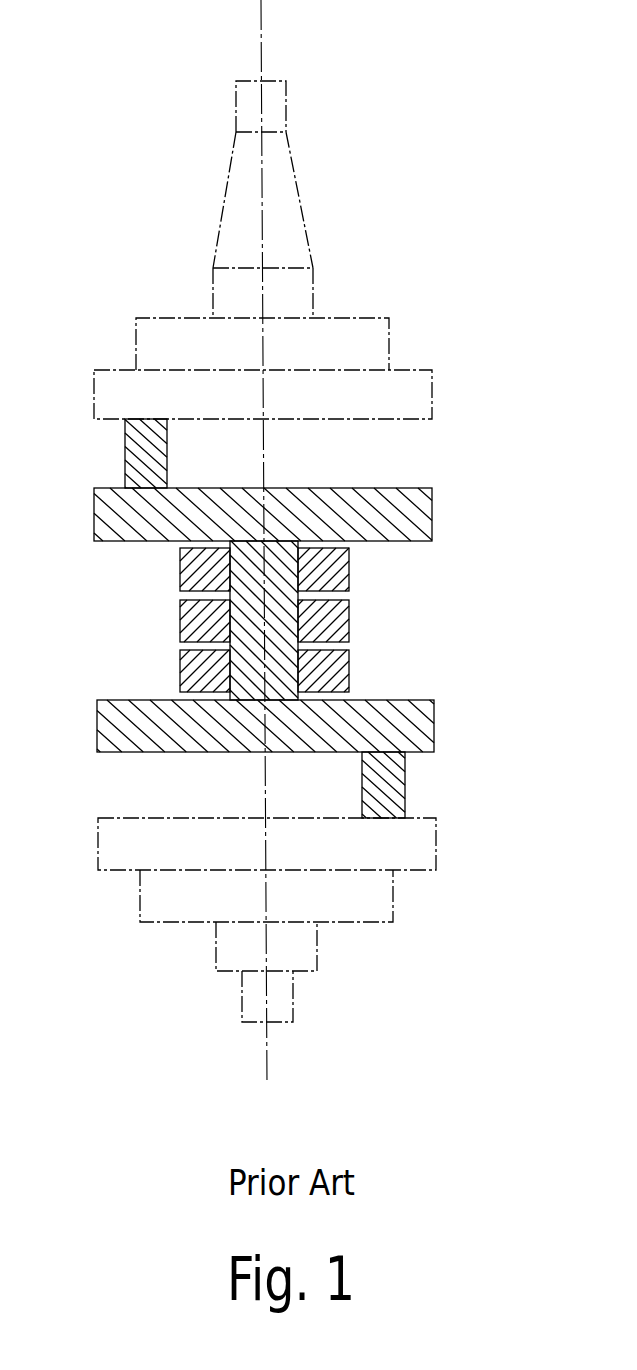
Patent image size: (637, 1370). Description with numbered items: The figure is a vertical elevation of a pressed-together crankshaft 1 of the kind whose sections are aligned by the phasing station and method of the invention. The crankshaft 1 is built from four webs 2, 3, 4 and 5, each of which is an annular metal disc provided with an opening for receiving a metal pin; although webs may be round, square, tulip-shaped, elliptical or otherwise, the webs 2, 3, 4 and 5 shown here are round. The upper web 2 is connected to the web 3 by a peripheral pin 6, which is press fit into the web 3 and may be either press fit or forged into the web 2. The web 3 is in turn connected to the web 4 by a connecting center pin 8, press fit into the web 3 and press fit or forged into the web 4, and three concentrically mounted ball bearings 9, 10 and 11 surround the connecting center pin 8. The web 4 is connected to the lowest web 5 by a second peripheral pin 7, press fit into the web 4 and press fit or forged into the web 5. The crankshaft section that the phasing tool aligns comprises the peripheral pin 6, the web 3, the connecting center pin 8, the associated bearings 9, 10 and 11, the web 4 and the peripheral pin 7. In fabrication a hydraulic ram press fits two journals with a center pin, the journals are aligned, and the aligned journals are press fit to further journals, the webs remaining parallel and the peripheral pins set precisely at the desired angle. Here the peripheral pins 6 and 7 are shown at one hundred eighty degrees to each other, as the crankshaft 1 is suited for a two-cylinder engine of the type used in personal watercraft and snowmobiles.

The pressed-together crankshaft 1 is at (306, 186).
The web 2 is at (438, 392).
The web 3 is at (438, 515).
The web 4 is at (434, 722).
The web 5 is at (436, 848).
The peripheral pin 6 is at (124, 453).
The peripheral pin 7 is at (406, 779).
The connecting center pin 8 is at (264, 620).
The ball bearing 9 is at (180, 571).
The ball bearing 10 is at (180, 621).
The ball bearing 11 is at (180, 671).